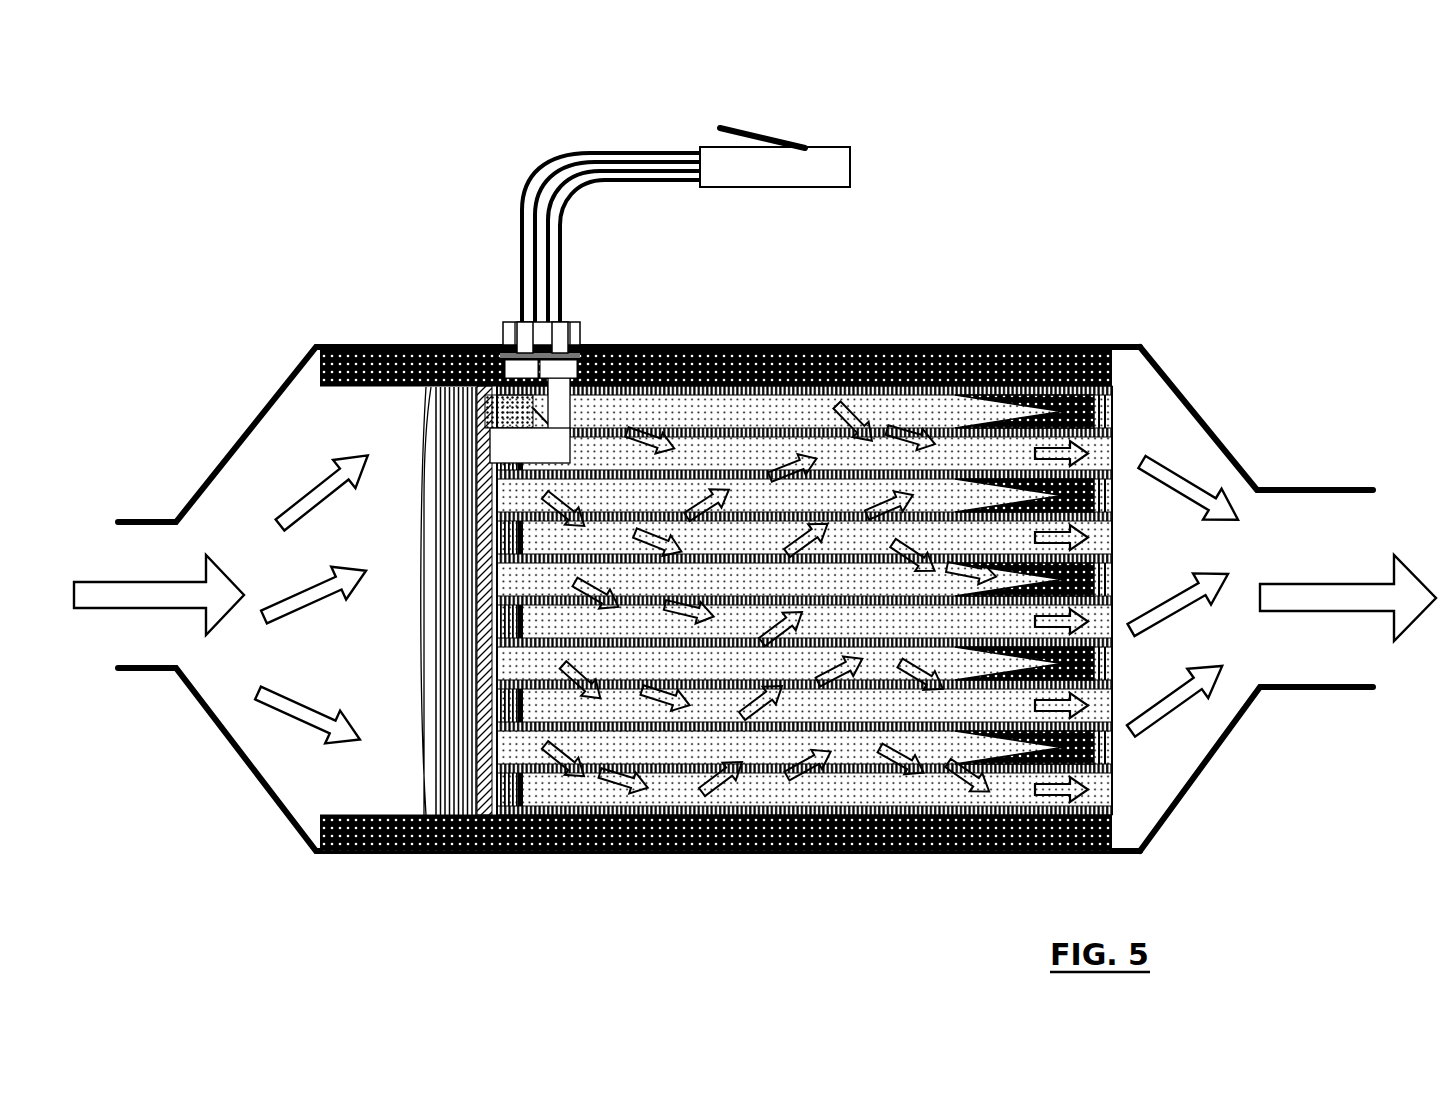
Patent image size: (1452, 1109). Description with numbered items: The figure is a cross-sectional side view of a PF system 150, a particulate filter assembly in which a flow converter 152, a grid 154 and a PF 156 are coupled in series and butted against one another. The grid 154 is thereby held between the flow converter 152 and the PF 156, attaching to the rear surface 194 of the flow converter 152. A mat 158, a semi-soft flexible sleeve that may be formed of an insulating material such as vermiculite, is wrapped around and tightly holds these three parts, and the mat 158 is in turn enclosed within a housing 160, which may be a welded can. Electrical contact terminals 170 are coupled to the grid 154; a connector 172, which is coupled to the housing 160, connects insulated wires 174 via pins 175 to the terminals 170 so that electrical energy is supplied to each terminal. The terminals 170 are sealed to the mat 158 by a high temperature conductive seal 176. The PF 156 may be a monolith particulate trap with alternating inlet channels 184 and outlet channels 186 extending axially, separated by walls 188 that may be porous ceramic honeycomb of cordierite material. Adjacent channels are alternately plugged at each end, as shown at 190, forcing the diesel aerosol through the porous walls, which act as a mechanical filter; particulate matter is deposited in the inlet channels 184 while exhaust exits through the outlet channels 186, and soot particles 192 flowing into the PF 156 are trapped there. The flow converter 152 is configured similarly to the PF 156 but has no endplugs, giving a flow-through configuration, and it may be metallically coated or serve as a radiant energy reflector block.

The PF system 150 is at (1061, 235).
The flow converter 152 is at (420, 782).
The grid 154 is at (481, 855).
The PF 156 is at (1137, 348).
The mat 158 is at (1117, 367).
The housing 160 is at (1113, 387).
The electrical contact terminals 170 is at (508, 440).
The connector 172 is at (583, 340).
The insulated wires 174 is at (690, 175).
The pins 175 is at (508, 322).
The high temperature conductive seal 176 is at (497, 352).
The inlet cells/channels 184 is at (1112, 654).
The outlet cells/channels 186 is at (1115, 705).
The walls 188 is at (808, 345).
The plugs 190 is at (497, 577).
The soot particles 192 is at (1113, 407).
The rear surface 194 is at (482, 753).